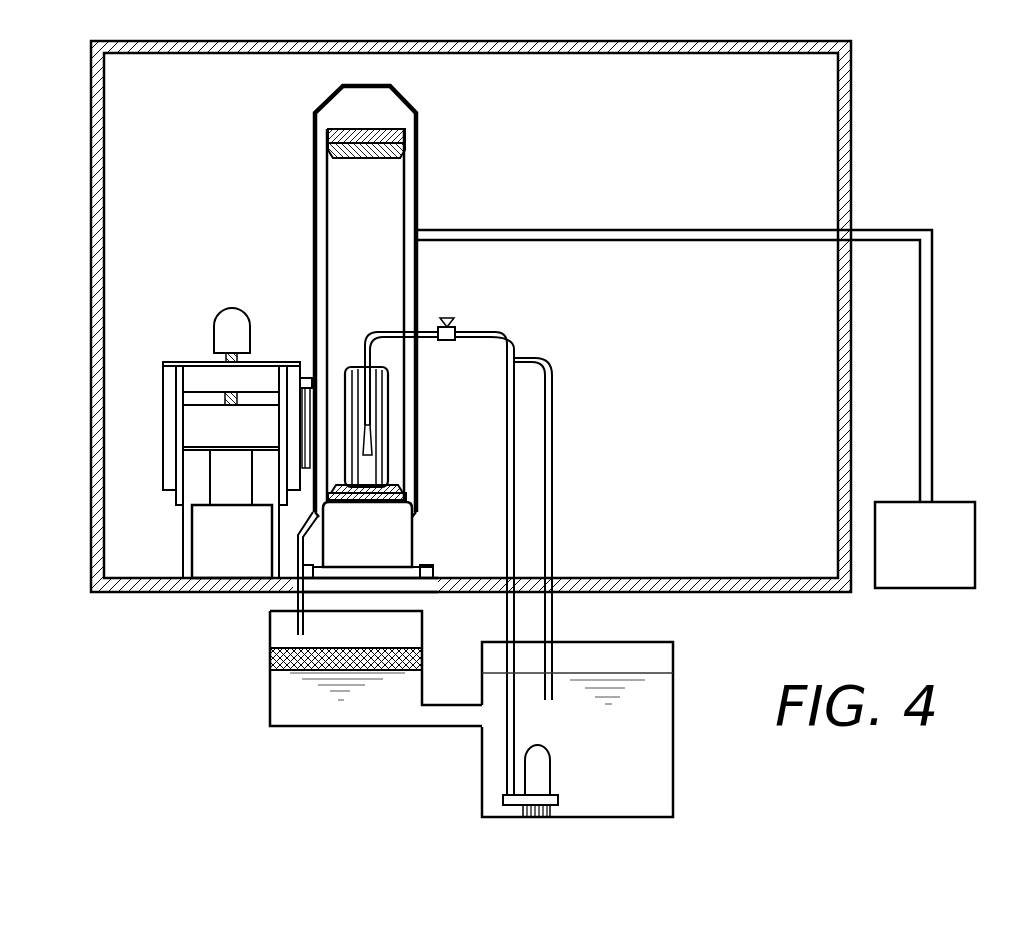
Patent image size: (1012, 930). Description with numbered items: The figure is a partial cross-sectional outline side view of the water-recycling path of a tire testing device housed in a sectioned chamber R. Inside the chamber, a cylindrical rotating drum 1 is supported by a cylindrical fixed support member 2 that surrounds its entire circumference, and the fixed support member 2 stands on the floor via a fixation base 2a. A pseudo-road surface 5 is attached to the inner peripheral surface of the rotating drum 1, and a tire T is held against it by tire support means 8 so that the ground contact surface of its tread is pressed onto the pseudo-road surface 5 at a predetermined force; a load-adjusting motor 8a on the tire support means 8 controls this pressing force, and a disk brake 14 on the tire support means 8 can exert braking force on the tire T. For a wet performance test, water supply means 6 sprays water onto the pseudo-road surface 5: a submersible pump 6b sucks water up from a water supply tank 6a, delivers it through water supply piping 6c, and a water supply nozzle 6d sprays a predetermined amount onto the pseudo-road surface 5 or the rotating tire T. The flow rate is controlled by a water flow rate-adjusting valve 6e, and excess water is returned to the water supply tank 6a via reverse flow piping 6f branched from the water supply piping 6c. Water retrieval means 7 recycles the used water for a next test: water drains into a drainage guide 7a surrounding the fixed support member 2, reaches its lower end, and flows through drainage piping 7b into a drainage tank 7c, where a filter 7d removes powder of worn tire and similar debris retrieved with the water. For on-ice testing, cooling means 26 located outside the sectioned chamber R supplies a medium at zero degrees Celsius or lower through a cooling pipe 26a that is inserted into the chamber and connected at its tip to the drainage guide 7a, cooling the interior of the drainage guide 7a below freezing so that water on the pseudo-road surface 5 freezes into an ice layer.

The rotating drum 1 is at (404, 150).
The fixed support member 2 is at (382, 131).
The fixation base 2a is at (387, 540).
The pseudo-road surface 5 is at (367, 161).
The water supply means 6 is at (526, 462).
The water supply tank 6a is at (673, 650).
The submersible pump 6b is at (538, 776).
The water supply piping 6c is at (506, 478).
The water supply nozzle 6d is at (372, 440).
The water flow rate-adjusting valve 6e is at (447, 321).
The reverse flow piping 6f is at (553, 402).
The water retrieval means 7 is at (295, 600).
The drainage guide 7a is at (313, 167).
The drainage piping 7b is at (297, 545).
The drainage tank 7c is at (423, 622).
The filter 7d is at (270, 660).
The tire support means 8 is at (189, 341).
The load-adjusting motor 8a is at (232, 320).
The disk brake 14 is at (307, 374).
The tire T is at (352, 366).
The sectioned chamber R is at (852, 133).
The cooling means 26 is at (925, 570).
The cooling pipe 26a is at (932, 355).